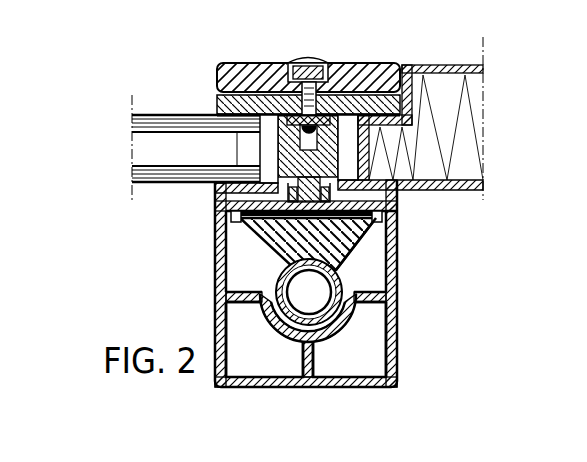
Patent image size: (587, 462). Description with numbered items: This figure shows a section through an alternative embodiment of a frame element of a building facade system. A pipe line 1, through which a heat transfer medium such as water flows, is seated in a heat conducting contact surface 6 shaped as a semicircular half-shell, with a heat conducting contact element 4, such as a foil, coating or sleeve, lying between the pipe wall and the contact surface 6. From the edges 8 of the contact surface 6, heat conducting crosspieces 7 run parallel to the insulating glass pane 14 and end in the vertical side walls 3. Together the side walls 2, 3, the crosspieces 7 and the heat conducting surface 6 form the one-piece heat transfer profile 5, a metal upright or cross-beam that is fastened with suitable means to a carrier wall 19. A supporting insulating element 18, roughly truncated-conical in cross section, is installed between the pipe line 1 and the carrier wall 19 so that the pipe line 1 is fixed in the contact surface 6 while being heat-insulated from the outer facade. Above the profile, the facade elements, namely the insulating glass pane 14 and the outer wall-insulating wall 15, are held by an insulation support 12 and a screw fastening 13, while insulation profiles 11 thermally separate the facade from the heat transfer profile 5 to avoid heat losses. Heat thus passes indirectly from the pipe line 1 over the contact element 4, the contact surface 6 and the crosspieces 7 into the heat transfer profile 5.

The pipe line 1 is at (338, 278).
The side wall 2 is at (350, 388).
The vertical side walls 3 is at (215, 297).
The heat conducting contact element 4 is at (340, 312).
The heat transfer profile 5 is at (310, 311).
The heat conducting contact surface 6 is at (278, 333).
The heat conducting crosspieces 7 is at (243, 307).
The edges of the heat conducting contact surface 8 is at (272, 289).
The insulation profiles 11 is at (216, 189).
The insulation support 12 is at (224, 104).
The screw fastening 13 is at (322, 60).
The insulating glass pane 14 is at (132, 174).
The outer wall-insulating wall 15 is at (477, 163).
The supporting insulating element 18 is at (257, 228).
The carrier wall 19 is at (373, 229).